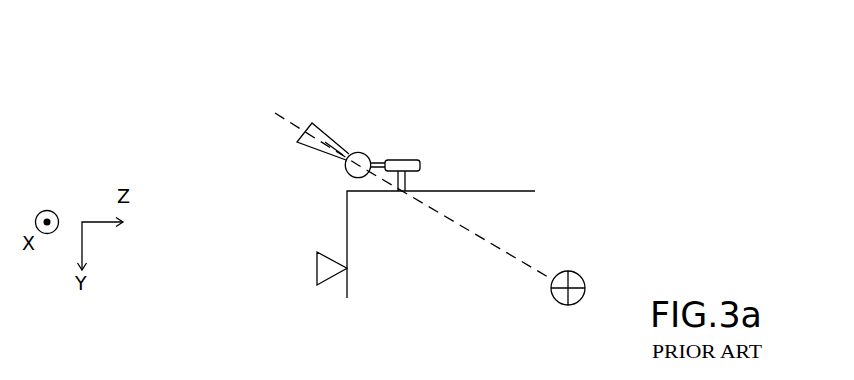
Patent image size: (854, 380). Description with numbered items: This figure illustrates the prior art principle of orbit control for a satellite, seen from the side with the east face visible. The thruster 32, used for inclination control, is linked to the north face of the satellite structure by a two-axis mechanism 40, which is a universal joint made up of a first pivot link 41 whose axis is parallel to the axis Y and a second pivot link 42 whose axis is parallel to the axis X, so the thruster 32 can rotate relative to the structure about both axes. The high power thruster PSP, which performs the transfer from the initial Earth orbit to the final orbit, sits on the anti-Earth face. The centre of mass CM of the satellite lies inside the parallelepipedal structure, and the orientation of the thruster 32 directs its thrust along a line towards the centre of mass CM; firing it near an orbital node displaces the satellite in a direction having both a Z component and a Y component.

The thruster 32 is at (312, 124).
The second pivot link 42 is at (357, 152).
The two-axis mechanism 40 is at (394, 117).
The first pivot link 41 is at (402, 160).
The high power thruster PSP is at (316, 270).
The centre of mass CM is at (584, 276).